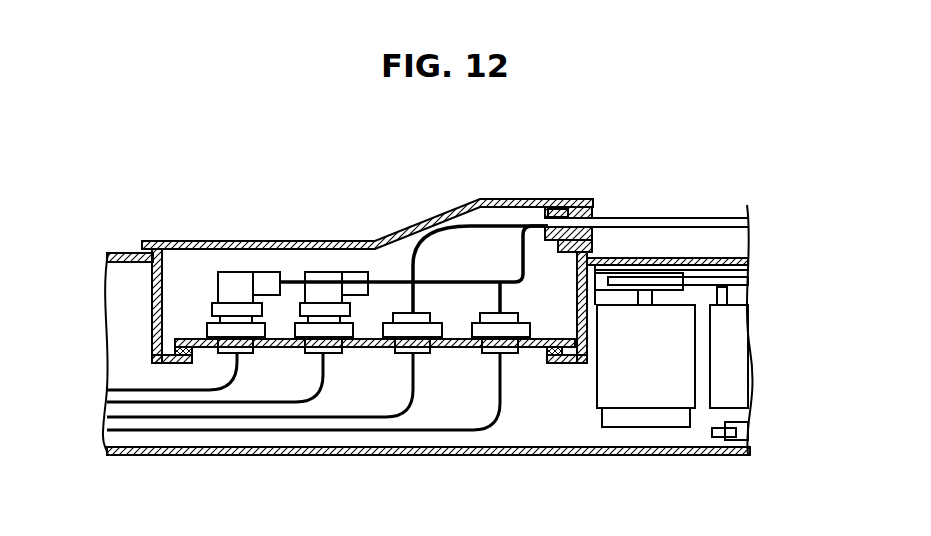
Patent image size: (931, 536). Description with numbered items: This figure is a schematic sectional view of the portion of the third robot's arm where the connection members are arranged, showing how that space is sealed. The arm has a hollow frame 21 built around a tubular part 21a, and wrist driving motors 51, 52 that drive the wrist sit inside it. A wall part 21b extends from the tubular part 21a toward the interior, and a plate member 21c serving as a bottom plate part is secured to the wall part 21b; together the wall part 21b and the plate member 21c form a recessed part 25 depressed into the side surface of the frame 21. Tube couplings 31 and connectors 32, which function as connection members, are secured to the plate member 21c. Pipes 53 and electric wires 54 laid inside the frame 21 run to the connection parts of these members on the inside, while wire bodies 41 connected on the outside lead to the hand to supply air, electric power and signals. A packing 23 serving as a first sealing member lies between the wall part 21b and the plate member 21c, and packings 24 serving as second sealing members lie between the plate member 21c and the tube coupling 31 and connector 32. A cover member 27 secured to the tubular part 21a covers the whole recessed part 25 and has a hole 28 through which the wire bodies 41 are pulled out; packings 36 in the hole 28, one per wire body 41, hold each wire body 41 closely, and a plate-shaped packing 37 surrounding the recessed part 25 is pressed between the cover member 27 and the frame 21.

The frame 21 is at (727, 218).
The tubular part 21a is at (590, 452).
The wall part 21b is at (165, 293).
The plate member 21c is at (283, 347).
The packing 23 is at (190, 355).
The packings 24 is at (385, 352).
The recessed part 25 is at (170, 337).
The cover member 27 is at (333, 241).
The hole 28 is at (592, 212).
The tube couplings 31 is at (321, 276).
The connectors 32 is at (486, 313).
The packings 36 is at (566, 215).
The packing 37 is at (142, 252).
The wire bodies 41 is at (387, 282).
The wrist driving motor 51 is at (653, 390).
The wrist driving motor 52 is at (728, 390).
The pipes 53 is at (125, 390).
The electric wires 54 is at (120, 455).